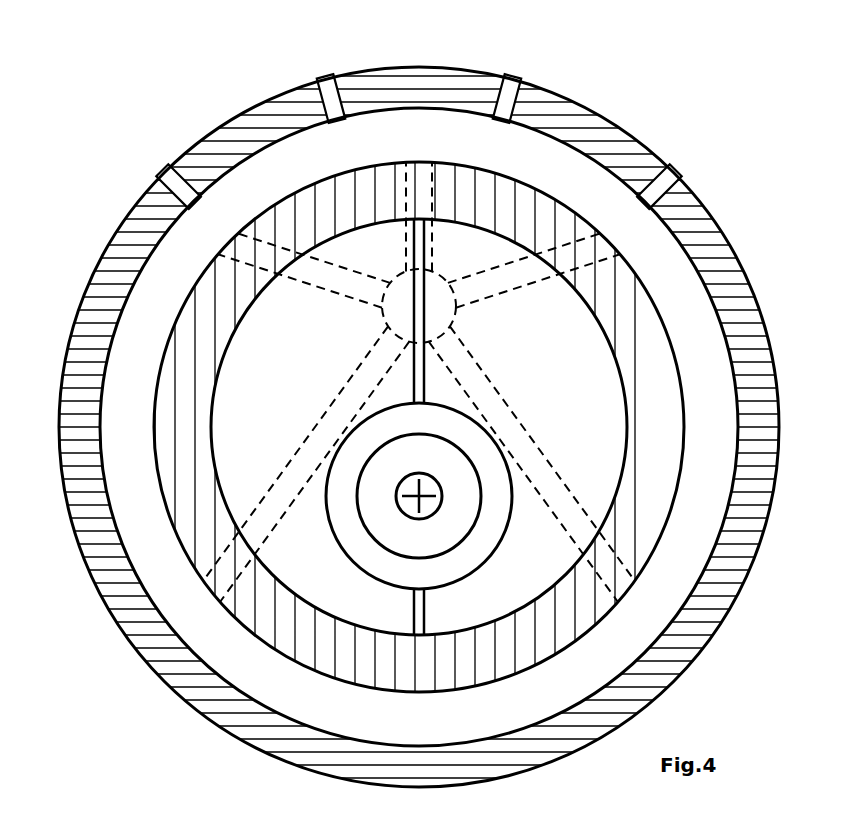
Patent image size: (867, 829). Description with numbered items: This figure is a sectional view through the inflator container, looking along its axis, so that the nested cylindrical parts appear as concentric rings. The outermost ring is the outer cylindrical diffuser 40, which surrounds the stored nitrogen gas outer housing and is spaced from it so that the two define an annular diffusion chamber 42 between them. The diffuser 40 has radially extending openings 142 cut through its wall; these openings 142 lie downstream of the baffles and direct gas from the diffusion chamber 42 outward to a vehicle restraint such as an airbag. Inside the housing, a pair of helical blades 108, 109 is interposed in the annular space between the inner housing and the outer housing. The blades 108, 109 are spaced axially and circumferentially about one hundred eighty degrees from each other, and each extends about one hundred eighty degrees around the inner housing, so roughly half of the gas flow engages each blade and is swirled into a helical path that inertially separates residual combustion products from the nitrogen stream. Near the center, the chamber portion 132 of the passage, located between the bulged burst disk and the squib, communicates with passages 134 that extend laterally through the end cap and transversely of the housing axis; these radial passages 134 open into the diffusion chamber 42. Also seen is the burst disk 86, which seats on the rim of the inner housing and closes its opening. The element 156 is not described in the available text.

The outer cylindrical diffuser 40 is at (431, 401).
The diffusion chamber 42 is at (700, 322).
The helical blade 108 is at (258, 333).
The helical blade 109 is at (558, 372).
The chamber portion 132 is at (437, 290).
The passages 134 is at (330, 272).
The radially extending openings 142 is at (327, 82).
The burst disk 86 is at (358, 534).
The sleeve 156 is at (493, 523).